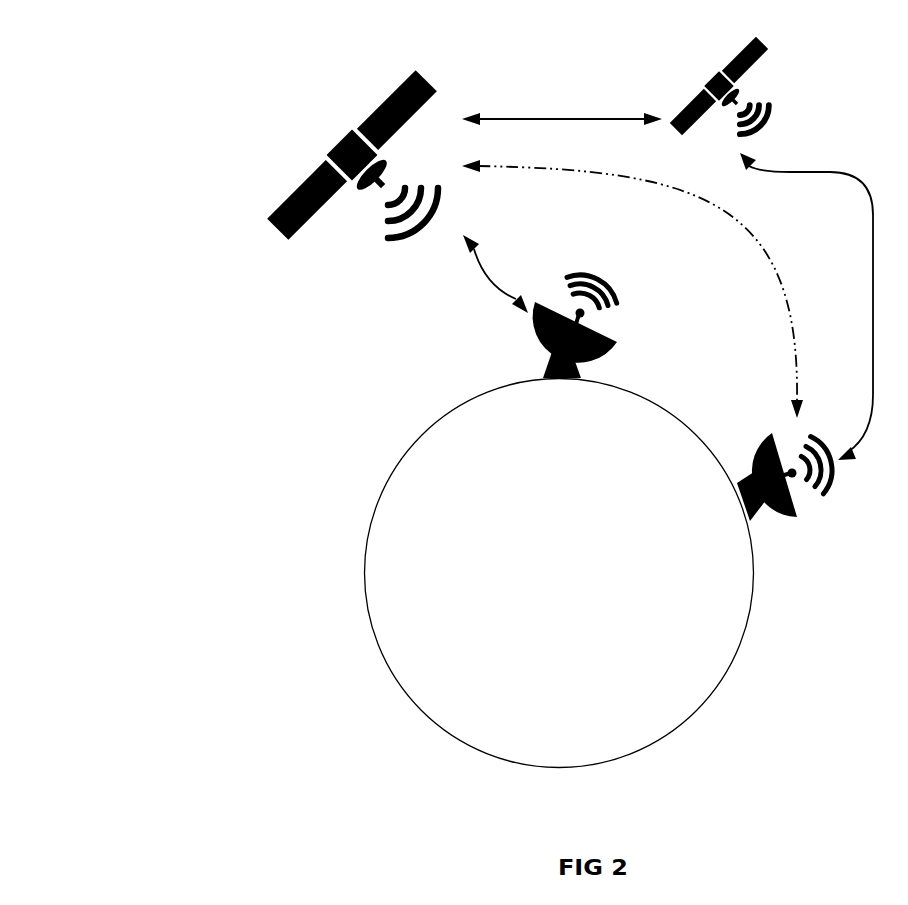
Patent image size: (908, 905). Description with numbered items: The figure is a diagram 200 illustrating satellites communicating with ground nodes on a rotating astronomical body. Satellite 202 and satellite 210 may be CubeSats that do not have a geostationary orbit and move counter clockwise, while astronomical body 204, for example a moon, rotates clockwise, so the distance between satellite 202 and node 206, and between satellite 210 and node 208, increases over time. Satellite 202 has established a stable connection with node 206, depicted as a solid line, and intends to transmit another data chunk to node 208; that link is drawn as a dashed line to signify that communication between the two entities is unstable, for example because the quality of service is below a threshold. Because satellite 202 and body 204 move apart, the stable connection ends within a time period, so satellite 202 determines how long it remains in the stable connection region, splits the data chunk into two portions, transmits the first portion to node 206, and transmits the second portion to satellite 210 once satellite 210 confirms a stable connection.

The diagram 200 is at (68, 115).
The satellite 202 is at (453, 102).
The astronomical body 204 is at (662, 415).
The node 206 is at (620, 310).
The node 208 is at (797, 517).
The satellite 210 is at (773, 55).